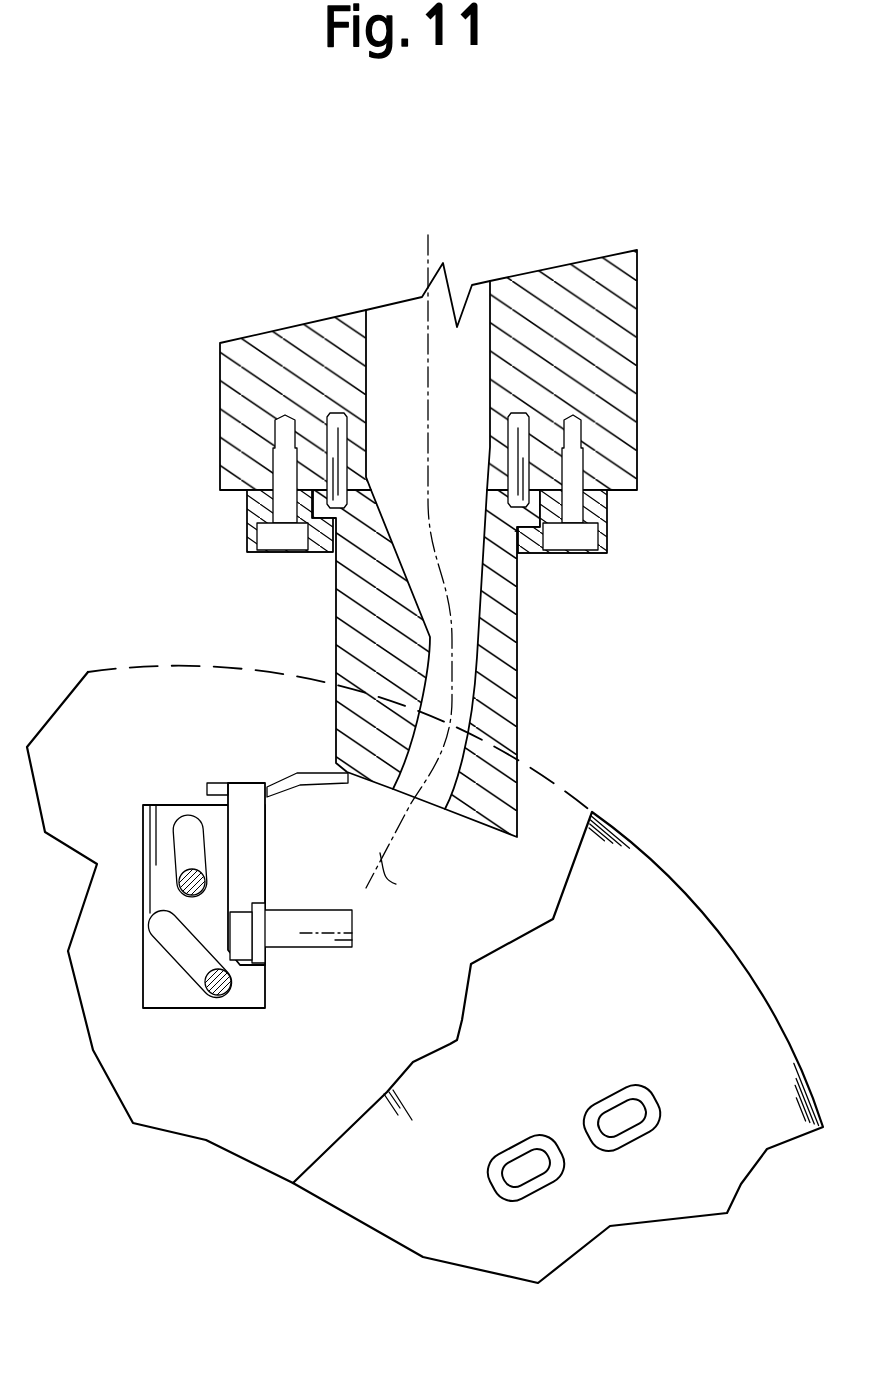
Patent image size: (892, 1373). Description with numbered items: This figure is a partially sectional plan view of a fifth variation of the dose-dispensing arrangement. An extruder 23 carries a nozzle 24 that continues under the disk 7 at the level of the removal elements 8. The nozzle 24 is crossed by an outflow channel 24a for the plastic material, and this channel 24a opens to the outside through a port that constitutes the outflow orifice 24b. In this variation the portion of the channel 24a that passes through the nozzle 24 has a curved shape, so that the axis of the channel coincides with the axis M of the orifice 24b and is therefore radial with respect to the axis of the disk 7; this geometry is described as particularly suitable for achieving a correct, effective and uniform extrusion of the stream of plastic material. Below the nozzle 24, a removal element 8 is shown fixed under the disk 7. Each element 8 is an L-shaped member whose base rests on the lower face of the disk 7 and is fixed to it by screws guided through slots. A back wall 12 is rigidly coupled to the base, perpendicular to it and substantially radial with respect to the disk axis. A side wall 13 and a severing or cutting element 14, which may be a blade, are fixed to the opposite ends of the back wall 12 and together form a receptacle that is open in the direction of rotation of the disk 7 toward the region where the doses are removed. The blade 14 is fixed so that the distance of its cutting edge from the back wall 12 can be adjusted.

The disk 7 is at (630, 980).
The element 8 is at (135, 842).
The back wall 12 is at (247, 843).
The side wall 13 is at (313, 928).
The severing or cutting element 14 is at (283, 783).
The extruder 23 is at (235, 423).
The nozzle 24 is at (502, 655).
The channel 24a is at (452, 765).
The outflow orifice 24b is at (428, 797).
The axis of the orifice M is at (403, 877).